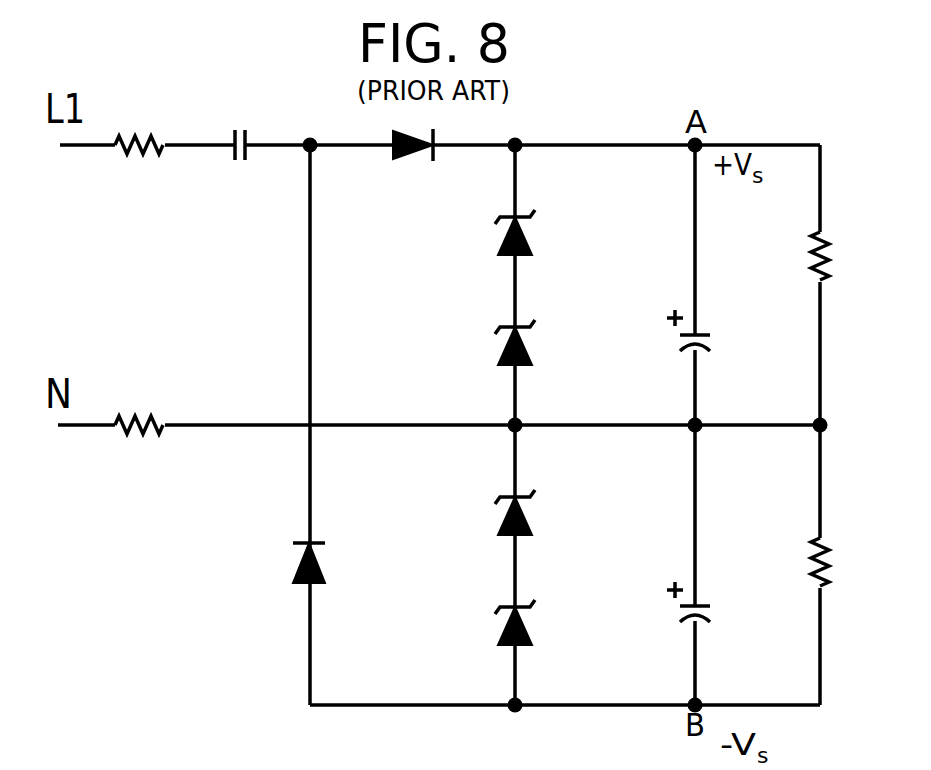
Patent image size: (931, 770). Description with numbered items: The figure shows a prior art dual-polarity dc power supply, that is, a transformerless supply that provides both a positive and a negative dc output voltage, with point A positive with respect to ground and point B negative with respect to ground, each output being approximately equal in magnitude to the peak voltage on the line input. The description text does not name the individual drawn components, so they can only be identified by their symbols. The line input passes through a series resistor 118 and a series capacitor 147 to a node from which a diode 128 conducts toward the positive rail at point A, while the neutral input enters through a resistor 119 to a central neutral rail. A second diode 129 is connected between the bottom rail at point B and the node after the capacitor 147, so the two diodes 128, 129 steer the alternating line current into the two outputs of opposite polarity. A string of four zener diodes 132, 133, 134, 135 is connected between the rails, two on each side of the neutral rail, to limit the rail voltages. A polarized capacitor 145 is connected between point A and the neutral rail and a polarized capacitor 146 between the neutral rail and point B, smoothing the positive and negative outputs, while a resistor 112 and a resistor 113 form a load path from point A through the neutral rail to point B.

The resistor 118 is at (140, 165).
The capacitor 147 is at (240, 163).
The diode 128 is at (410, 163).
The resistor 119 is at (138, 405).
The diode 129 is at (278, 563).
The zener diode 132 is at (486, 232).
The zener diode 133 is at (486, 342).
The zener diode 134 is at (486, 512).
The zener diode 135 is at (486, 622).
The electrolytic capacitor 145 is at (667, 335).
The electrolytic capacitor 146 is at (667, 607).
The resistor 112 is at (787, 256).
The resistor 113 is at (787, 562).